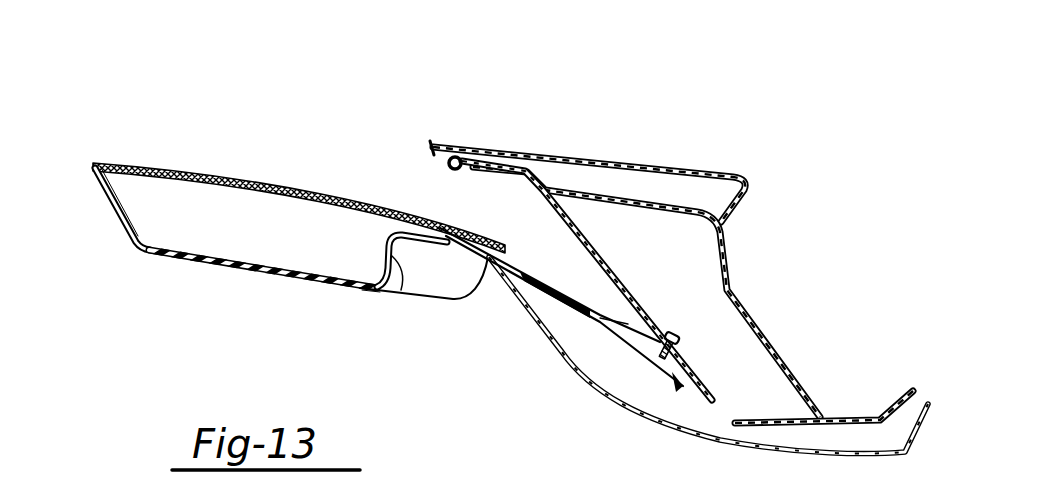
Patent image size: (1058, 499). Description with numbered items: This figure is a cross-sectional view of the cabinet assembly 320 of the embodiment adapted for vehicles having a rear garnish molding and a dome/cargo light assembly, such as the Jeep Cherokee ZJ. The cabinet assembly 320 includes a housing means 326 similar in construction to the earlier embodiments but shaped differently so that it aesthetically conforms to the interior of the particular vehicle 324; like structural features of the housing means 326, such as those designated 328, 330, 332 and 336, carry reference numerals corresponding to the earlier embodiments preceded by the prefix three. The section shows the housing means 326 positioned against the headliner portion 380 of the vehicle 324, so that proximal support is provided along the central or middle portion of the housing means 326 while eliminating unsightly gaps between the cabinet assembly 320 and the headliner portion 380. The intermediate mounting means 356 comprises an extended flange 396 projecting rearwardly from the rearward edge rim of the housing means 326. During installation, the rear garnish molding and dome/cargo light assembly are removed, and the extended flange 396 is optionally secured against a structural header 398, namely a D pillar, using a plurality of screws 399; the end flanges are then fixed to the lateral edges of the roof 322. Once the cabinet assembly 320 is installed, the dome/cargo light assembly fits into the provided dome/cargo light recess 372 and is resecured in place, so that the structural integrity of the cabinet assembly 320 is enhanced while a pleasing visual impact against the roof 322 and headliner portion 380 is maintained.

The cabinet assembly 320 is at (184, 281).
The roof 322 is at (437, 155).
The vehicle 324 is at (746, 174).
The housing means 326 is at (356, 289).
The side wall 328 is at (123, 213).
The lower skin 330 is at (482, 278).
The bottom flange 332 is at (243, 262).
The trim panel 336 is at (100, 170).
The intermediate mounting means 356 is at (677, 387).
The dome/cargo light recess 372 is at (401, 270).
The headliner portion 380 is at (218, 185).
The extended flange 396 is at (603, 337).
The structural header 398 is at (562, 218).
The screws 399 is at (670, 333).